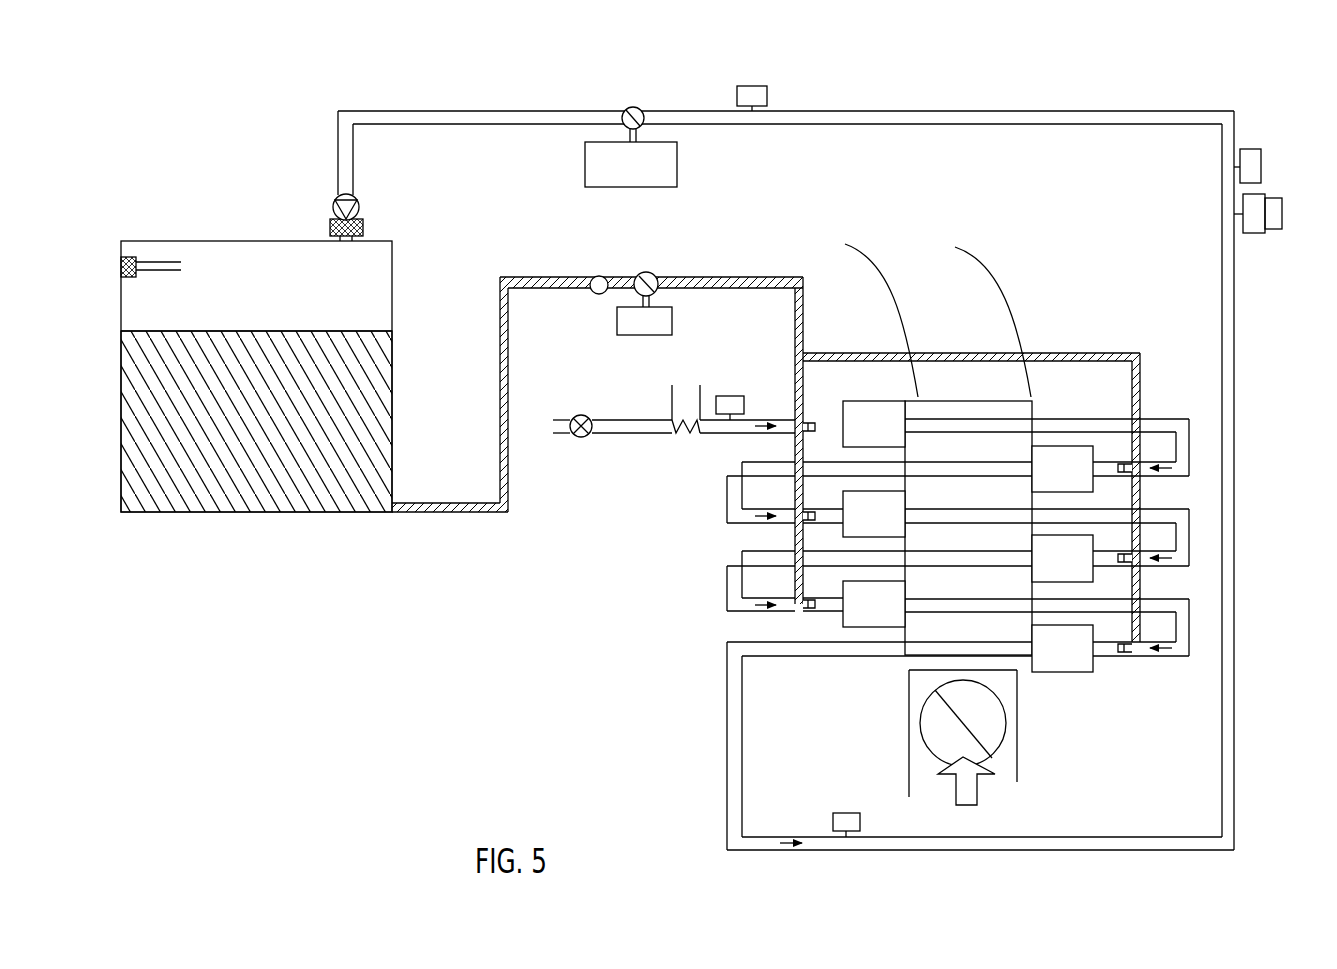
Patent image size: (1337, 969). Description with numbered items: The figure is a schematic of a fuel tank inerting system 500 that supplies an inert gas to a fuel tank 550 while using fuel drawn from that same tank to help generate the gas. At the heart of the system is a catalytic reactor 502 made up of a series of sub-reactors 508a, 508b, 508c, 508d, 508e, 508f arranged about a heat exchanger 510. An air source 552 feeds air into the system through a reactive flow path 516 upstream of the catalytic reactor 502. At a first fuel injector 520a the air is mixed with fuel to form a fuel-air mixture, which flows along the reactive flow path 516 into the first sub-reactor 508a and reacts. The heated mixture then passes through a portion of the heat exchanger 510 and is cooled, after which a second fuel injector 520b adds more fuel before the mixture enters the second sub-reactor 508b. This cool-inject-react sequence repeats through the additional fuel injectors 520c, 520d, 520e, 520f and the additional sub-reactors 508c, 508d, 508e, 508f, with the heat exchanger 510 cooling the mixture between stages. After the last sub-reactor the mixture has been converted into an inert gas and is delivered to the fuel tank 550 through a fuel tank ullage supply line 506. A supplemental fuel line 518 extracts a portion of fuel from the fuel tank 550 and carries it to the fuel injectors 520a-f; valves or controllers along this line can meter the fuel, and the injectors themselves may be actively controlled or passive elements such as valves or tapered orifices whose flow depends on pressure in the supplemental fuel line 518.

The inerting system 500 is at (220, 157).
The catalytic reactor 502 is at (886, 673).
The fuel tank ullage supply line 506 is at (866, 115).
The first sub-reactor 508a is at (873, 417).
The second sub-reactor 508b is at (1083, 460).
The additional sub-reactor 508c is at (858, 521).
The additional sub-reactor 508d is at (1083, 550).
The additional sub-reactor 508e is at (857, 610).
The additional sub-reactor 508f is at (1083, 640).
The heat exchanger 510 is at (993, 408).
The reactive flow path 516 is at (1156, 419).
The supplemental fuel line 518 is at (468, 512).
The first fuel injector 520a is at (810, 423).
The second fuel injector 520b is at (1123, 462).
The additional fuel injector 520c is at (808, 514).
The additional fuel injector 520d is at (1123, 552).
The additional fuel injector 520e is at (808, 604).
The additional fuel injector 520f is at (1123, 642).
The fuel tank 550 is at (268, 512).
The air source 552 is at (555, 425).